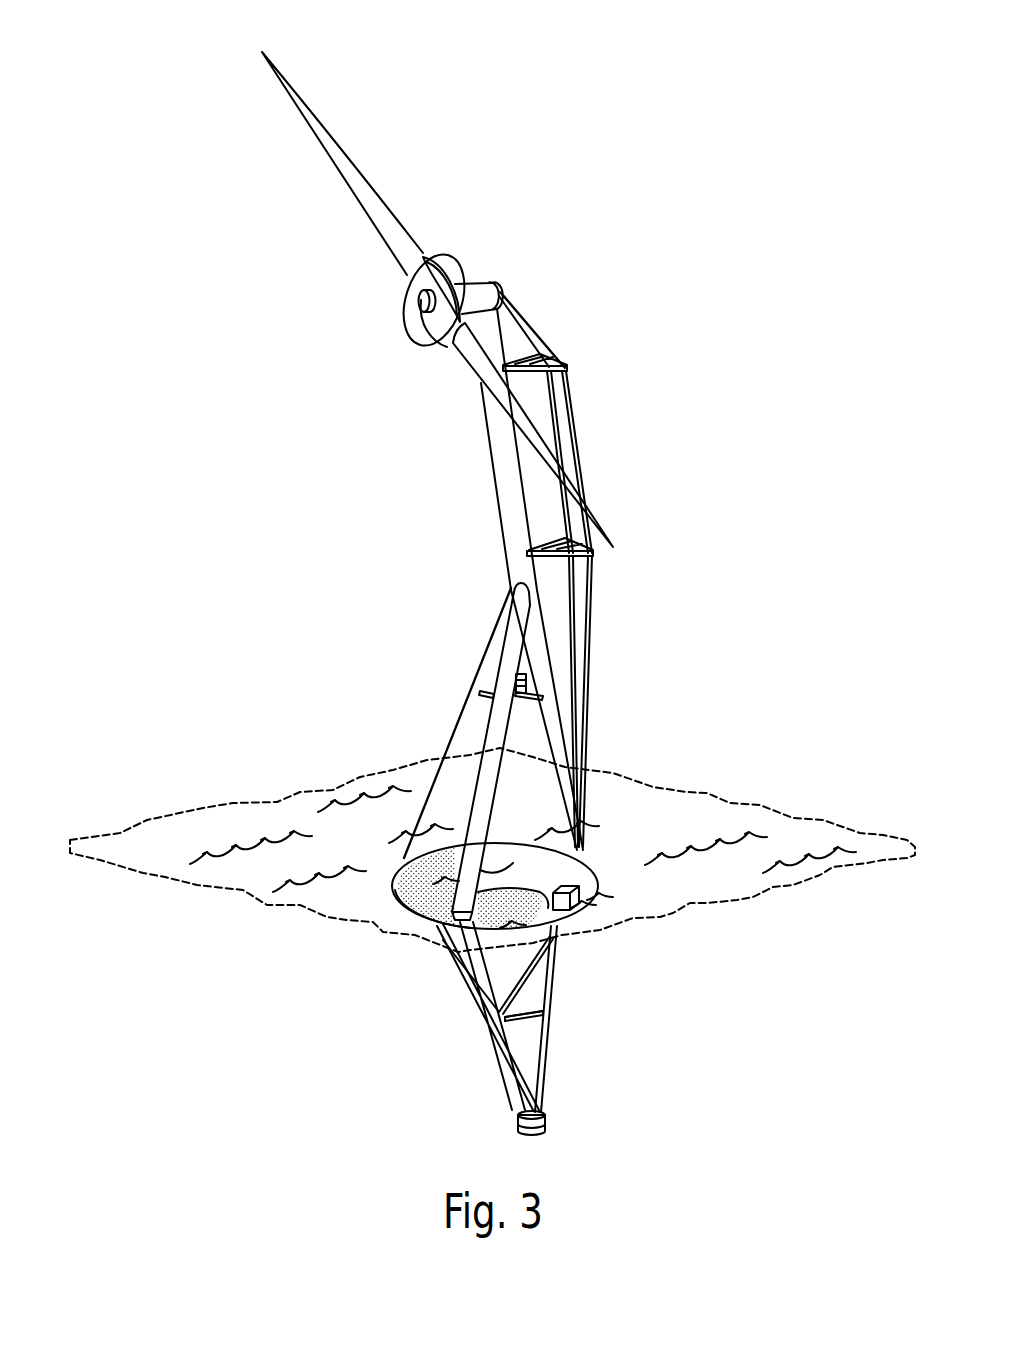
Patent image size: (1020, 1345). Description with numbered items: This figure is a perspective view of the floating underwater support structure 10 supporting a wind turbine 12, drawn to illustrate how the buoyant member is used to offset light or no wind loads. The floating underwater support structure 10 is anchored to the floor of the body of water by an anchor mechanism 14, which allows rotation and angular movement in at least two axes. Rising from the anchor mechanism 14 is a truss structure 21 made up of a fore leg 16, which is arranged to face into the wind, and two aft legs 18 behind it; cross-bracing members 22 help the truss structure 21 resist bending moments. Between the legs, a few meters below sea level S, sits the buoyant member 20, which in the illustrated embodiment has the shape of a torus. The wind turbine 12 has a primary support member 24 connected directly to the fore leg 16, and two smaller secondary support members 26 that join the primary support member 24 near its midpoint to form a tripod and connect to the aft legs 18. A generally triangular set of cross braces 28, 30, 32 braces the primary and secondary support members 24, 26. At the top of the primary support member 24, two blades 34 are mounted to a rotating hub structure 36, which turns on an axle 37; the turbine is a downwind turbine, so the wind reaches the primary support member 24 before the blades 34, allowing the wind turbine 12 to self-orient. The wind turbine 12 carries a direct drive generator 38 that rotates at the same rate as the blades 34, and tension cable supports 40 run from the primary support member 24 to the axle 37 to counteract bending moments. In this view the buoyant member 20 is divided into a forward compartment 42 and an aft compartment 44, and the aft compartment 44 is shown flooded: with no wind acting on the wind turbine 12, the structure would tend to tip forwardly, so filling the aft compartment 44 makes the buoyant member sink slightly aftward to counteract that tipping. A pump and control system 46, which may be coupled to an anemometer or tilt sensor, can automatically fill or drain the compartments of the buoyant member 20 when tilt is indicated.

The floating underwater support structure 10 is at (382, 1050).
The wind turbine 12 is at (356, 543).
The anchor mechanism 14 is at (545, 1126).
The fore leg 16 is at (550, 977).
The aft legs 18 is at (470, 988).
The buoyant member 20 is at (539, 857).
The truss structure 21 is at (568, 1032).
The cross-bracing members 22 is at (612, 913).
The primary support member 24 is at (533, 652).
The secondary support members 26 is at (474, 797).
The cross brace 28 is at (543, 700).
The cross brace 30 is at (520, 675).
The cross brace 32 is at (480, 696).
The blades 34 is at (357, 172).
The hub structure 36 is at (412, 281).
The axle 37 is at (421, 298).
The direct drive generator 38 is at (422, 333).
The tension cable supports 40 is at (578, 440).
The forward compartment 42 is at (526, 858).
The aft compartment 44 is at (407, 900).
The pump and control system 46 is at (590, 887).
The sea level S is at (230, 812).